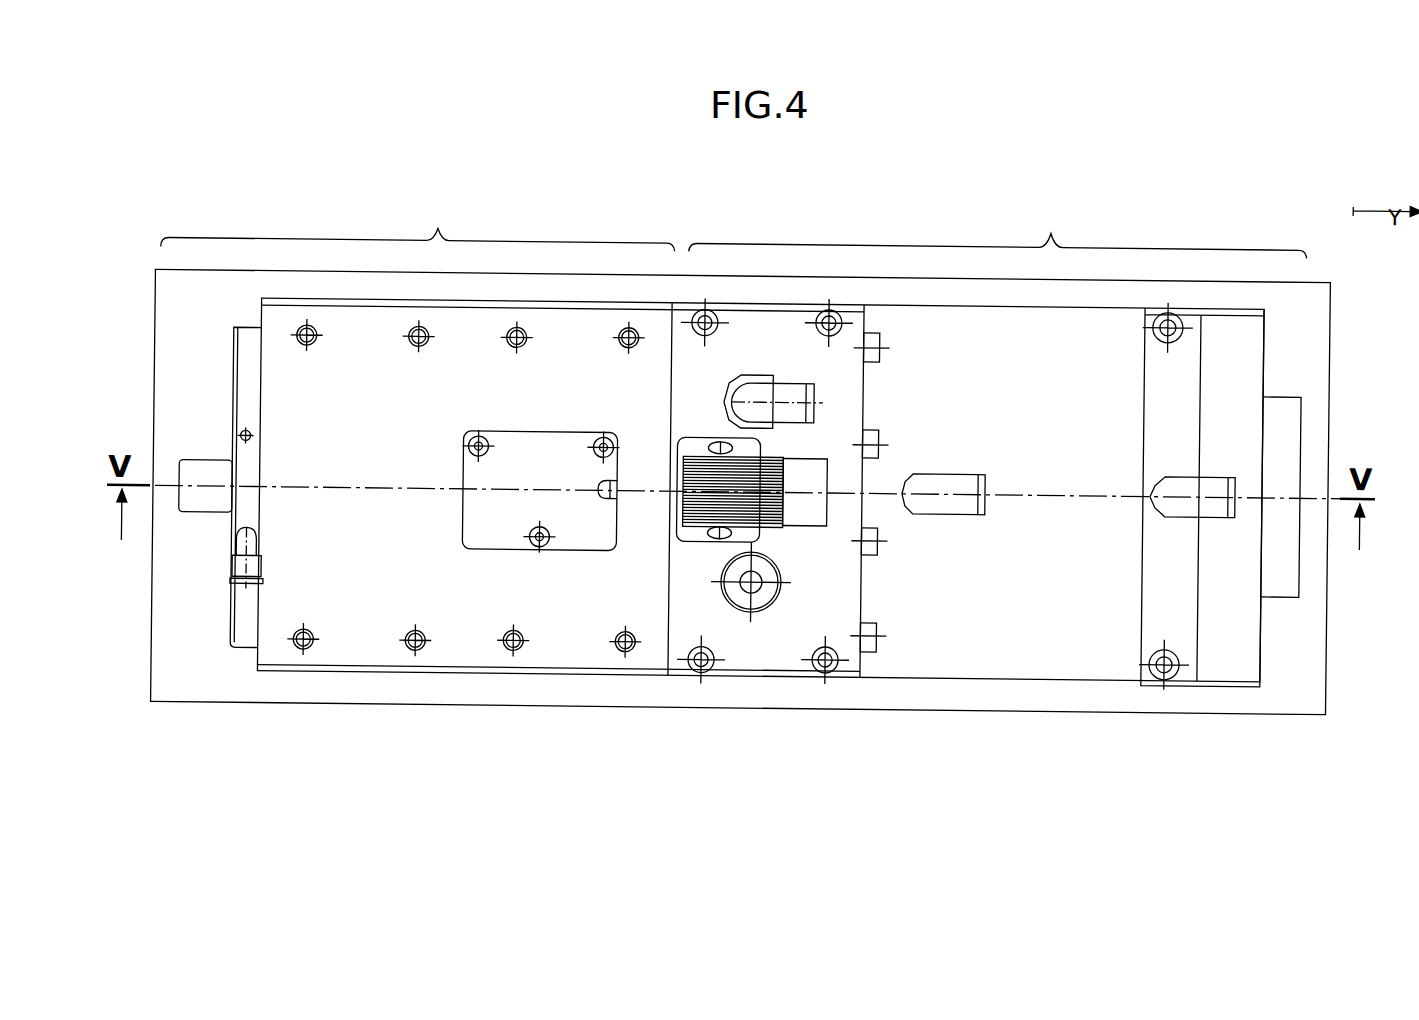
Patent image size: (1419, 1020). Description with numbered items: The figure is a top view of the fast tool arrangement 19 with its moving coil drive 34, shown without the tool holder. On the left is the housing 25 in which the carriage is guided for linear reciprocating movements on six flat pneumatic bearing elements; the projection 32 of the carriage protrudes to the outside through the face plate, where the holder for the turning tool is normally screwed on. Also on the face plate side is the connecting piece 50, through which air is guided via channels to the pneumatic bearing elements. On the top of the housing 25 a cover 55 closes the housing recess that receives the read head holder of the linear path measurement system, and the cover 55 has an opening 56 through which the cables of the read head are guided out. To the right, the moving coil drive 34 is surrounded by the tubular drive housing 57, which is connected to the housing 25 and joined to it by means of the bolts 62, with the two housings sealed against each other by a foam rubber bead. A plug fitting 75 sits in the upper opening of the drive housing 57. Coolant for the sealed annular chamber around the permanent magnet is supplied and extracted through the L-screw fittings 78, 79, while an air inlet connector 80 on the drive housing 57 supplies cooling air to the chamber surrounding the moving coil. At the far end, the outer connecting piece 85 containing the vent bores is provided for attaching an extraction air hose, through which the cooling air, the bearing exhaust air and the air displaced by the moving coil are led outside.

The fast tool arrangement 19 is at (418, 220).
The moving coil drive 34 is at (998, 224).
The housing 25 is at (365, 445).
The projection 32 is at (209, 471).
The connecting piece 50 is at (237, 568).
The cover 55 is at (533, 451).
The opening 56 is at (609, 501).
The drive housing 57 is at (1057, 419).
The bolts 62 is at (868, 436).
The plug fitting 75 is at (806, 516).
The L-screw fitting 78 is at (947, 480).
The L-screw fitting 79 is at (1212, 482).
The air inlet connector 80 is at (790, 390).
The outer connecting piece 85 is at (1281, 404).